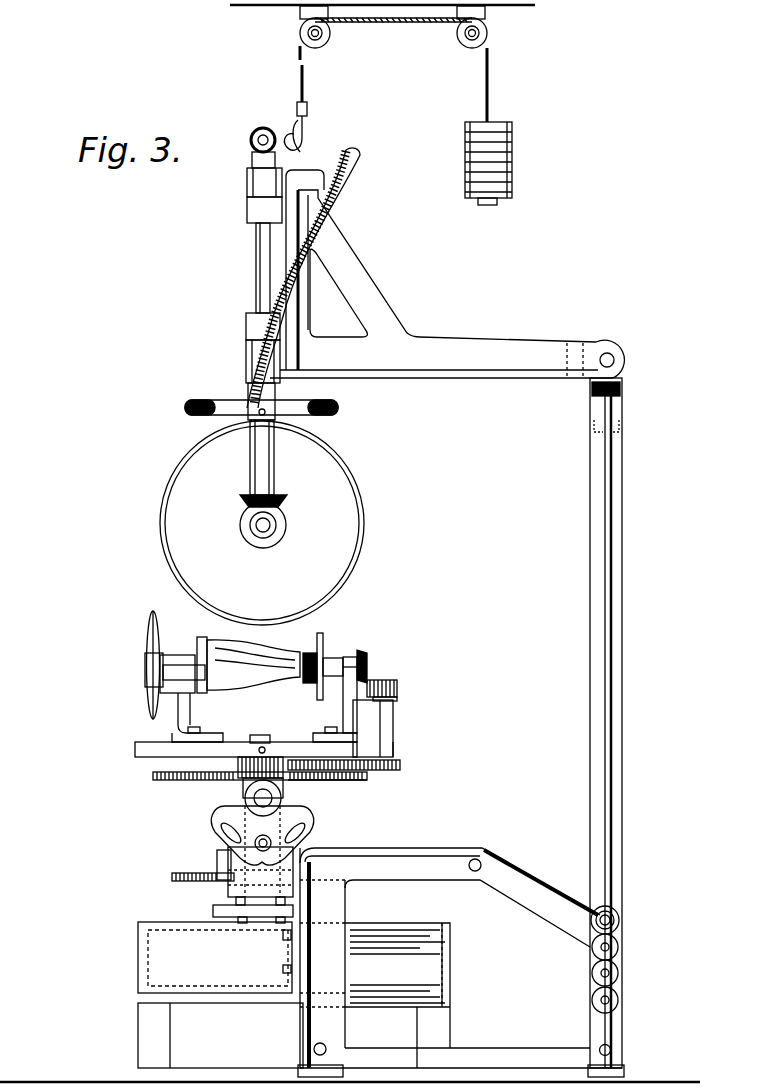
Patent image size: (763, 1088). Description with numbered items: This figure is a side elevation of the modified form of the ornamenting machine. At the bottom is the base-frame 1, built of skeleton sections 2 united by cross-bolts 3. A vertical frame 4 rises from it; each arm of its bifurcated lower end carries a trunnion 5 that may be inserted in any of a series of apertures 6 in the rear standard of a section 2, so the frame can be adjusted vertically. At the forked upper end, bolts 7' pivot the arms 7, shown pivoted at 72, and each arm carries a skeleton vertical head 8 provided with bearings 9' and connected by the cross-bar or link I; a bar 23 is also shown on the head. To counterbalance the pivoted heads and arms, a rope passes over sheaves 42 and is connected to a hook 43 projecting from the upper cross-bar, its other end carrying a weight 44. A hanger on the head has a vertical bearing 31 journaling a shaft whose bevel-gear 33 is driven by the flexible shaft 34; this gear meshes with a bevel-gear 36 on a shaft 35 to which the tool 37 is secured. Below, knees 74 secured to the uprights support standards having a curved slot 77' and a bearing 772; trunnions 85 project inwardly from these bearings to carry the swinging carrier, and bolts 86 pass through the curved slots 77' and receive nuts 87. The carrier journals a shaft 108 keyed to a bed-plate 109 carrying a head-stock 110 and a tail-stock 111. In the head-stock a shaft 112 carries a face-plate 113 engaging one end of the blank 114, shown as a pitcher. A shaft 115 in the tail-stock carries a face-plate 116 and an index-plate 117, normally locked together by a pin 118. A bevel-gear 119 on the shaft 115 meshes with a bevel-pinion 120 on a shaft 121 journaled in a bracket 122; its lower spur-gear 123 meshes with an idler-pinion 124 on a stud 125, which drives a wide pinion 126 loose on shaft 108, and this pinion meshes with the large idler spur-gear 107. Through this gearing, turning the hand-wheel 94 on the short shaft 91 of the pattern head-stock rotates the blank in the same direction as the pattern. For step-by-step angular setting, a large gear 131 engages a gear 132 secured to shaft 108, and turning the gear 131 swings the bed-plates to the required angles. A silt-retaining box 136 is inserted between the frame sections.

The sheaves 42 is at (330, 40).
The hook 43 is at (300, 160).
The weight 44 is at (512, 163).
The flexible power conveyer or shaft 34 is at (340, 193).
The bearings 9' is at (243, 275).
The cross-bar or link I is at (247, 215).
The vertical head 8 is at (308, 318).
The arms 7 is at (447, 346).
The pivot pin of arm 72 is at (615, 358).
The bolts 7' is at (586, 420).
The vertical frame 4 is at (592, 545).
The handle bar 23 is at (338, 408).
The vertical bearing 31 is at (268, 462).
The bevel-gear 33 is at (284, 498).
The shaft 35 is at (275, 519).
The bevel-gear 36 is at (270, 525).
The tool 37 is at (160, 505).
The hand-wheel 94 is at (147, 633).
The short shaft 91 is at (145, 667).
The shaft 112 is at (147, 678).
The head-stock 110 is at (178, 660).
The face-plate or chuck-head 113 is at (202, 637).
The blank 114 is at (253, 665).
The pin or plunger 118 is at (303, 655).
The index-plate 117 is at (322, 640).
The face-plate 116 is at (325, 656).
The bevel-gear 119 is at (367, 658).
The shaft 115 is at (360, 668).
The shaft 121 is at (382, 680).
The bevel-pinion 120 is at (397, 690).
The bracket 122 is at (373, 728).
The shaft 108 is at (268, 726).
The tail-stock 111 is at (343, 715).
The bed-plate 109 is at (135, 750).
The large spur-gear 107 is at (153, 776).
The wide pinion 126 is at (238, 790).
The trunnions 85 is at (272, 798).
The idler-pinion 124 is at (360, 757).
The spur-gear 123 is at (400, 764).
The stud 125 is at (340, 780).
The bearing 772 is at (243, 802).
The curved slot 77' is at (262, 834).
The nuts 87 is at (252, 846).
The bolts 86 is at (302, 855).
The large gear 131 is at (172, 877).
The gear 132 is at (217, 880).
The silt-retaining box 136 is at (215, 957).
The knees 74 is at (286, 968).
The base-frame 1 is at (461, 962).
The skeleton sections 2 is at (445, 850).
The cross-bolts 3 is at (481, 862).
The trunnion 5 is at (619, 920).
The apertures 6 is at (609, 1000).